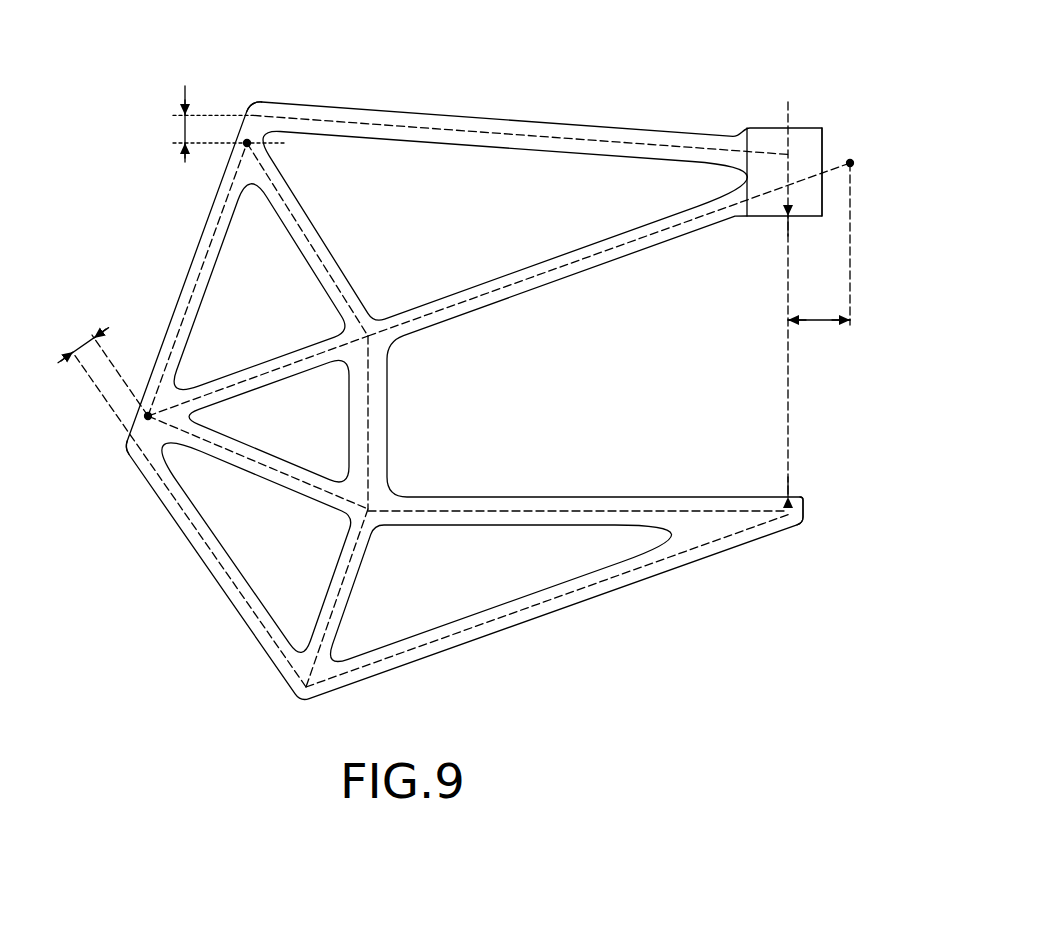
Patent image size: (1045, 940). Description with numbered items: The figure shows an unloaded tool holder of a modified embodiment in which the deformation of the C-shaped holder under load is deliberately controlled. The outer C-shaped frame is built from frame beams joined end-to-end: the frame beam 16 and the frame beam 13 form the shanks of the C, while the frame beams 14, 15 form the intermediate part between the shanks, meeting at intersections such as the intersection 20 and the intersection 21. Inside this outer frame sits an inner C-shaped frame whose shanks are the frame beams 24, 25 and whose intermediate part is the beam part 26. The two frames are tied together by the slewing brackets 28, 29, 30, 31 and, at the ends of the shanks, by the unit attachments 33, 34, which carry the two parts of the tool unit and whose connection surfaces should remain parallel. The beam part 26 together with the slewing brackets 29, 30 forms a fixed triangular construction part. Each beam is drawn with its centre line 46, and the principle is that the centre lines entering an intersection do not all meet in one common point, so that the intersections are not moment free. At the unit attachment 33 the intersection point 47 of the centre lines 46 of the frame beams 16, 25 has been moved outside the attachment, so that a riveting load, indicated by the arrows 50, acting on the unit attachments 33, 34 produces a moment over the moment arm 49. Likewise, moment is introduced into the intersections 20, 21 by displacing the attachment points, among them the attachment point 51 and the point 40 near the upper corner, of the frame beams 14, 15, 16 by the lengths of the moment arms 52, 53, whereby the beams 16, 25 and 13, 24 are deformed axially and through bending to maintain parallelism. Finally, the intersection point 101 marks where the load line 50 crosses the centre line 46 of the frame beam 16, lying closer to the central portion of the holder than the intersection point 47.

The frame beam 13 is at (455, 648).
The frame beam 14 is at (216, 590).
The frame beam 15 is at (188, 268).
The frame beam 16 is at (468, 114).
The intersection 20 is at (126, 456).
The intersection 21 is at (290, 102).
The frame beam 24 is at (490, 497).
The frame beam 25 is at (614, 260).
The beam part 26 is at (388, 395).
The slewing bracket 28 is at (366, 550).
The slewing bracket 29 is at (250, 471).
The slewing bracket 30 is at (273, 383).
The slewing bracket 31 is at (332, 242).
The unit attachment 33 is at (790, 530).
The unit attachment 34 is at (812, 137).
The intersection point of member axes 40 is at (256, 148).
The centre line 46 is at (655, 128).
The intersection point 47 is at (855, 165).
The moment arm 49 is at (831, 319).
The load line / arrows 50 is at (787, 272).
The attachment point 51 is at (140, 417).
The moment arm 52 is at (182, 128).
The moment arm 53 is at (96, 363).
The intersection point 101 is at (786, 152).